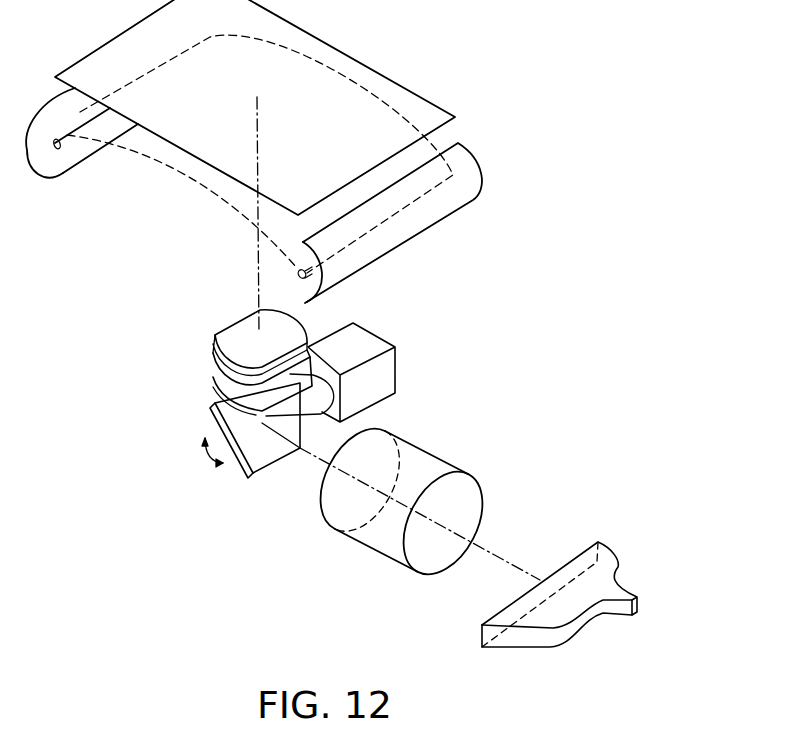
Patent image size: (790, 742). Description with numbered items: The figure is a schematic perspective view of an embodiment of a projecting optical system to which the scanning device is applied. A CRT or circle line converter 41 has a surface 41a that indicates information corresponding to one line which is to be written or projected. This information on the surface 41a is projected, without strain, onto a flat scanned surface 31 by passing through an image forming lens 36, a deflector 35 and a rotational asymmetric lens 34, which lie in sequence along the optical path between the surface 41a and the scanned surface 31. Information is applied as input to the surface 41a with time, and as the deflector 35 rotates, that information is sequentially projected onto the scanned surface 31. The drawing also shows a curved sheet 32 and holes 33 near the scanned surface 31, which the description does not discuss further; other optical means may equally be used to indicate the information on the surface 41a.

The scanned surface 31 is at (420, 102).
The curved sheet 32 is at (120, 145).
The holes 33 is at (58, 150).
The rotational asymmetric lens 34 is at (212, 322).
The deflector 35 is at (248, 468).
The image forming lens 36 is at (428, 458).
The CRT or circle line converter 41 is at (609, 562).
The surface 41a is at (580, 557).